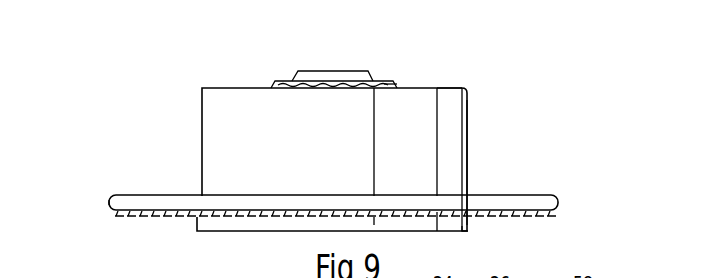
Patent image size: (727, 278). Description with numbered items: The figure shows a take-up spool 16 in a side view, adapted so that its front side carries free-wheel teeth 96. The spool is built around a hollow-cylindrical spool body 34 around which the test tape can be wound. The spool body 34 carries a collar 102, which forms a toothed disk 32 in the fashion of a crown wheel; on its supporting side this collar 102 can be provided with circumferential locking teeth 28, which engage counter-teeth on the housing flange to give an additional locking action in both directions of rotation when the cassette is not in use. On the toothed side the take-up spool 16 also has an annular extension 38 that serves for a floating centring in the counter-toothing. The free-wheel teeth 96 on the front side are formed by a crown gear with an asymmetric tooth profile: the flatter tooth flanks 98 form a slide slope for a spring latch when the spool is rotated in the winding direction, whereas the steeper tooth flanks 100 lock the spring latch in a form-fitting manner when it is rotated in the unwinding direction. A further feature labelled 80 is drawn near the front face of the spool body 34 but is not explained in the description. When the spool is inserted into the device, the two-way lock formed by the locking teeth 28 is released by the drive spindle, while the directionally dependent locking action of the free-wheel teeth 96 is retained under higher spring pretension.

The take-up spool 16 is at (200, 126).
The locking teeth 28 is at (152, 217).
The toothed disk 32 is at (560, 200).
The spool body 34 is at (468, 99).
The annular extension 38 is at (472, 230).
The rim 80 is at (454, 86).
The free-wheel teeth 96 is at (390, 83).
The flatter tooth flanks 98 is at (320, 82).
The steeper tooth flanks 100 is at (336, 84).
The collar 102 is at (153, 196).